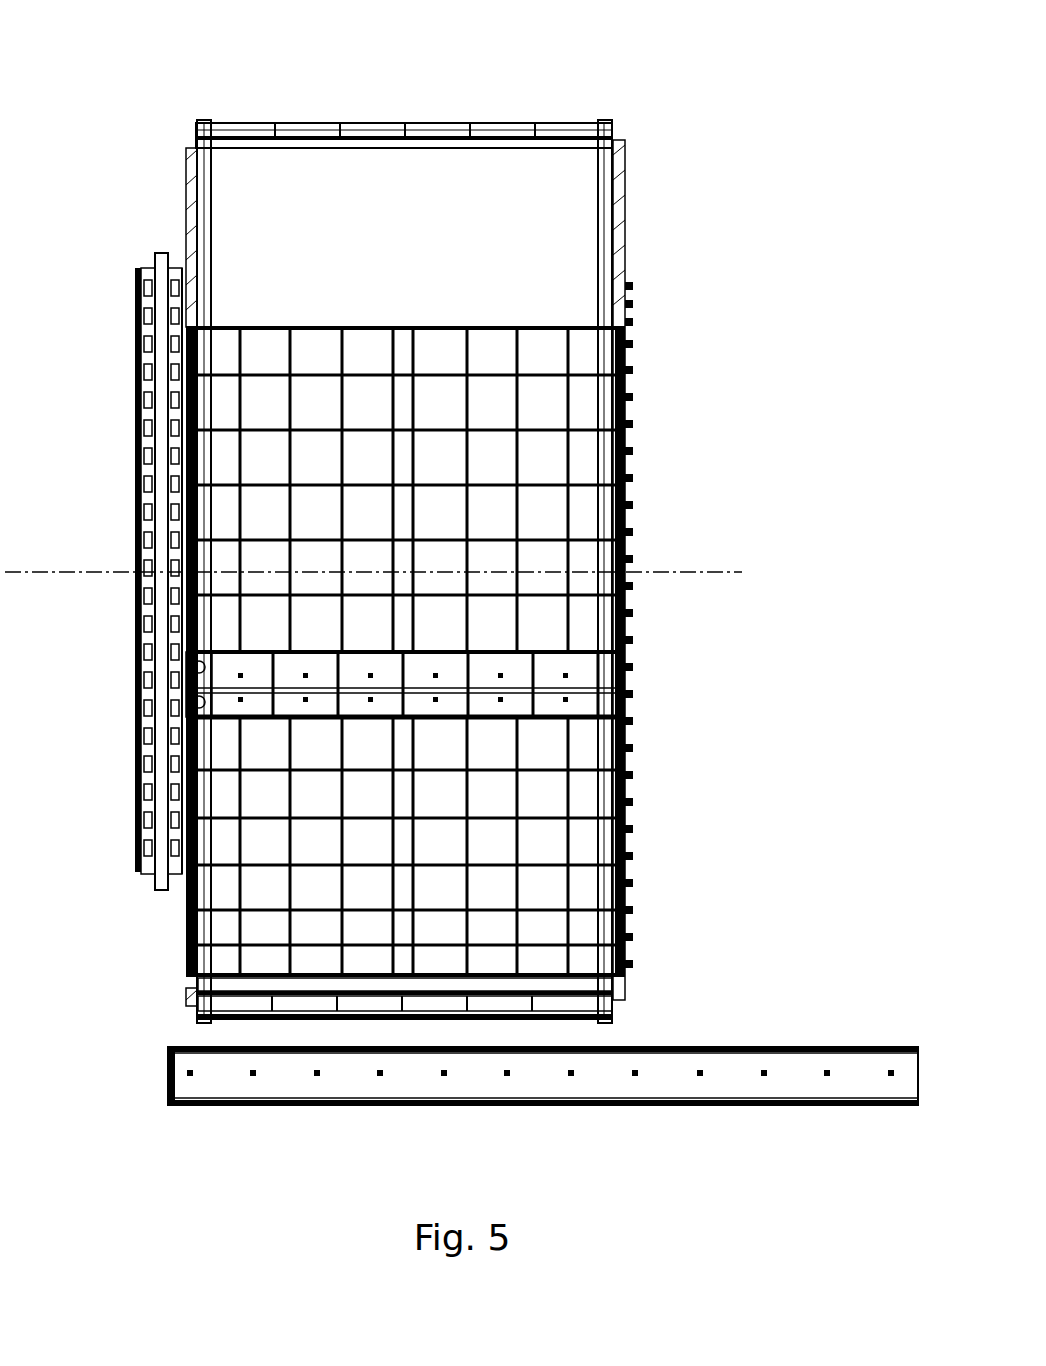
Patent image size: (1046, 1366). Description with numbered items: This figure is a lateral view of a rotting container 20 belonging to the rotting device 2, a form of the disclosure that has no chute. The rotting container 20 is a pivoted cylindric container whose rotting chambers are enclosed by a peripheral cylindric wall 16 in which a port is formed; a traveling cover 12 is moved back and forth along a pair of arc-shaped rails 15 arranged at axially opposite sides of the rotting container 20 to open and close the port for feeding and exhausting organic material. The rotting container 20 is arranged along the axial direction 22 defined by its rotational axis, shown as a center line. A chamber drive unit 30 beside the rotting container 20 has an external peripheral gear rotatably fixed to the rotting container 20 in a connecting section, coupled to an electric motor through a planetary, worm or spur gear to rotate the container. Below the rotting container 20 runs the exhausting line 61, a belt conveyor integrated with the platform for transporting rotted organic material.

The rotting device 2 is at (803, 168).
The traveling cover 12 is at (578, 403).
The arc-shaped rails 15 is at (186, 198).
The peripheral cylindric wall 16 is at (494, 180).
The rotting container 20 is at (395, 118).
The axial direction 22 is at (708, 560).
The chamber drive unit 30 is at (135, 369).
The exhausting line 61 is at (222, 1106).